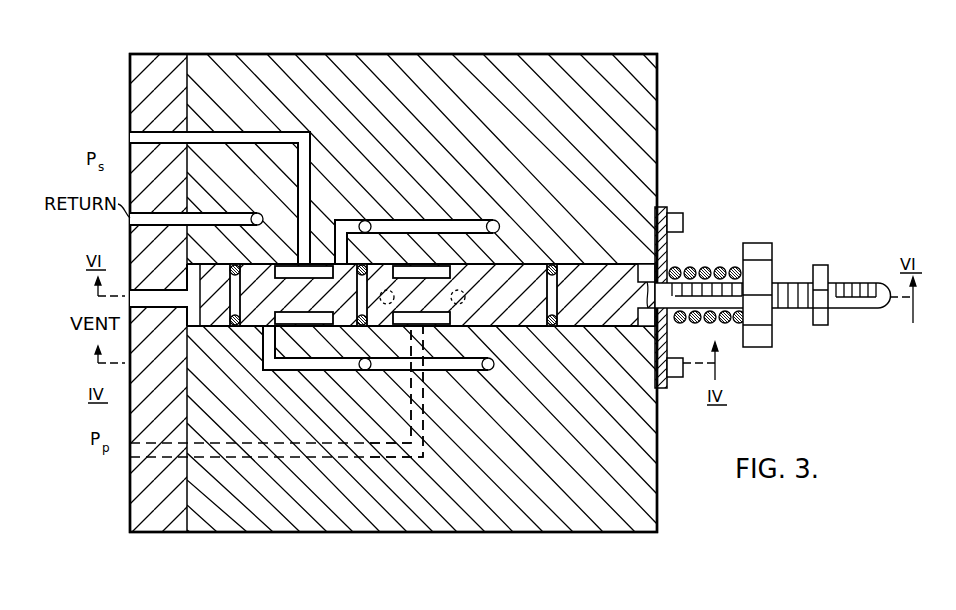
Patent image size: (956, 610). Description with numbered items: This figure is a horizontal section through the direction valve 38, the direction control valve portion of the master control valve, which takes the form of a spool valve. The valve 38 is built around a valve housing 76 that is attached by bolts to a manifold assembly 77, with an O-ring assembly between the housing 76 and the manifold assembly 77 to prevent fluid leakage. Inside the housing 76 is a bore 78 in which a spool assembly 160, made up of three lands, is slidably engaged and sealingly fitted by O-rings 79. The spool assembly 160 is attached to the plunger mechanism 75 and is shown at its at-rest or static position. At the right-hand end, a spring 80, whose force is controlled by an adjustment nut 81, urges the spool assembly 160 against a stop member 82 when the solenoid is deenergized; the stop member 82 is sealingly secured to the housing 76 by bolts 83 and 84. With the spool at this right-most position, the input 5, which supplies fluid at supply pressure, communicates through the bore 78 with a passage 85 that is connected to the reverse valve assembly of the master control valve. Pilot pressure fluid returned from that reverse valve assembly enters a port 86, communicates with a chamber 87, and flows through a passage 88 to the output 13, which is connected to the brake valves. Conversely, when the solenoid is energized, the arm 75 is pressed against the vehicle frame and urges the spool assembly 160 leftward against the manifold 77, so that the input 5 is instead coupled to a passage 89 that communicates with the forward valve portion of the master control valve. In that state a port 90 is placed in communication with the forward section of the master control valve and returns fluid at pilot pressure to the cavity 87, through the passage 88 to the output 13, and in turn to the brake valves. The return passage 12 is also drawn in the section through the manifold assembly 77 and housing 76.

The input 5 is at (130, 140).
The return passage 12 is at (131, 226).
The output 13 is at (130, 451).
The direction valve 38 is at (414, 566).
The plunger mechanism 75 is at (820, 268).
The valve housing 76 is at (478, 54).
The manifold assembly 77 is at (160, 55).
The bore 78 is at (194, 328).
The O-rings 79 is at (233, 328).
The spring 80 is at (707, 269).
The adjustment nut 81 is at (765, 253).
The stop member 82 is at (664, 389).
The bolt 83 is at (683, 219).
The bolt 84 is at (683, 366).
The passage 85 is at (467, 220).
The port 86 is at (465, 299).
The chamber 87 is at (440, 327).
The passage 88 is at (367, 458).
The passage 89 is at (345, 371).
The port 90 is at (394, 297).
The spool assembly 160 is at (530, 275).